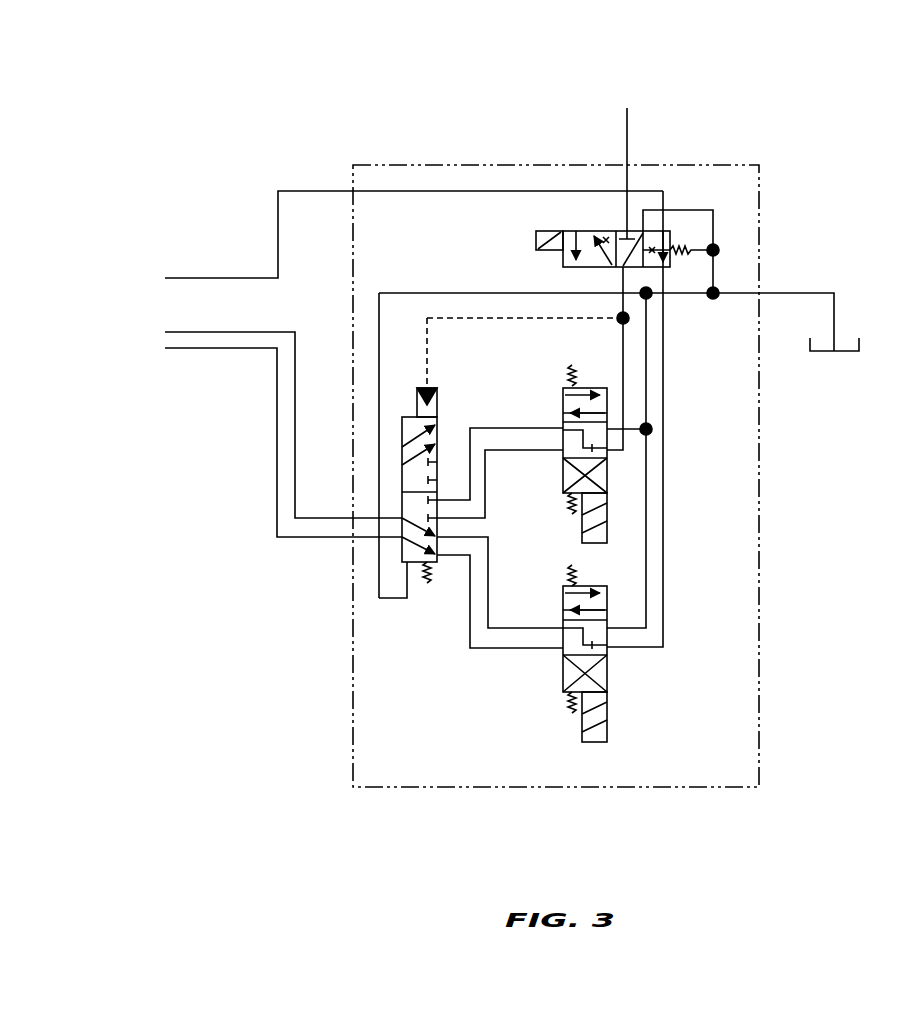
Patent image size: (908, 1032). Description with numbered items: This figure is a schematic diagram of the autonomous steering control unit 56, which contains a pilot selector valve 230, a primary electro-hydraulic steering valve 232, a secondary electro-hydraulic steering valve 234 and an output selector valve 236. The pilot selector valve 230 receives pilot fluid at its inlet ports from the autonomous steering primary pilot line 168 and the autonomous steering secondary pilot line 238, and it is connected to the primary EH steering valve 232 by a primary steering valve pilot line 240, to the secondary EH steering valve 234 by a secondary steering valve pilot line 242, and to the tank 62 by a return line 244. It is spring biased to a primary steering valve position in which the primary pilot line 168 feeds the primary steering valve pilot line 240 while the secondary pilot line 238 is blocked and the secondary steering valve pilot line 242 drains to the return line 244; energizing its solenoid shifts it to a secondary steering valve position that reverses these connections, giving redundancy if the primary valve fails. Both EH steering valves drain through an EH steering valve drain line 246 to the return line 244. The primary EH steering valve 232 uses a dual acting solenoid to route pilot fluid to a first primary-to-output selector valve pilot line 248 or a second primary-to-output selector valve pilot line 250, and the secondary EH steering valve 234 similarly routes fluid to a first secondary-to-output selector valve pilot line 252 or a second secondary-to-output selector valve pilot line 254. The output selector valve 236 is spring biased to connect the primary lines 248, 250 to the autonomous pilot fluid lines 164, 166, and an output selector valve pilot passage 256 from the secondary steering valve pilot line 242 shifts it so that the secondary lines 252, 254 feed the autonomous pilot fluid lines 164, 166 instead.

The autonomous steering control unit 56 is at (186, 60).
The tank 62 is at (836, 352).
The autonomous pilot fluid line 164 is at (310, 537).
The autonomous pilot fluid line 166 is at (295, 462).
The autonomous steering primary pilot line 168 is at (278, 236).
The pilot selector valve 230 is at (562, 250).
The primary electro-hydraulic (EH) steering valve 232 is at (609, 673).
The secondary electro-hydraulic (EH) steering valve 234 is at (563, 396).
The output selector valve 236 is at (437, 562).
The autonomous steering secondary pilot line 238 is at (627, 130).
The primary steering valve pilot line 240 is at (664, 588).
The secondary steering valve pilot line 242 is at (622, 352).
The return line 244 is at (780, 293).
The EH steering valve drain line 246 is at (646, 522).
The first primary-to-output selector valve pilot line 248 is at (527, 648).
The second primary-to-output selector valve pilot line 250 is at (523, 628).
The first secondary-to-output selector valve pilot line 252 is at (515, 450).
The second secondary-to-output selector valve pilot line 254 is at (517, 428).
The output selector valve pilot passage 256 is at (427, 352).